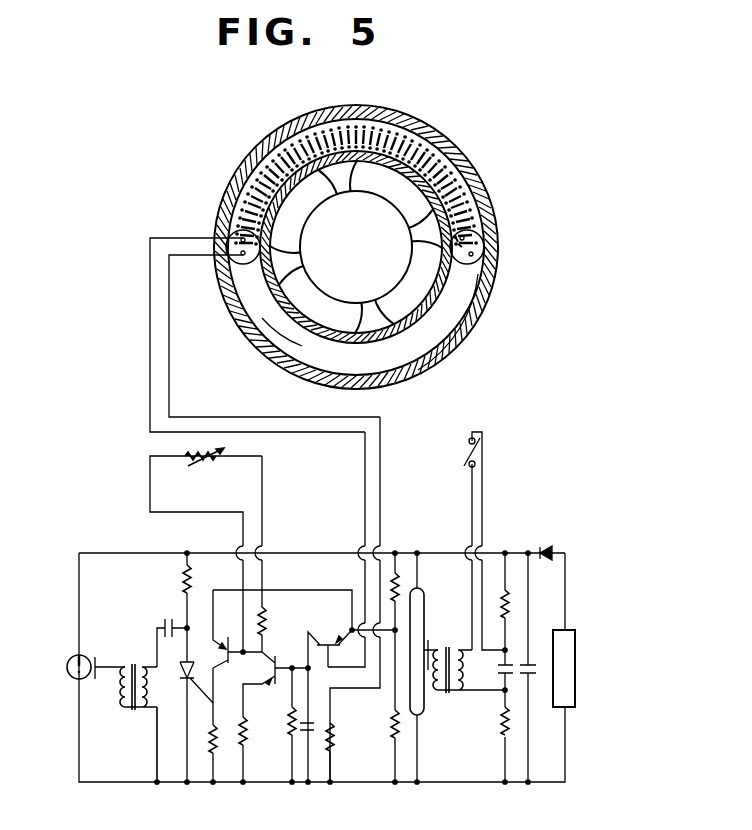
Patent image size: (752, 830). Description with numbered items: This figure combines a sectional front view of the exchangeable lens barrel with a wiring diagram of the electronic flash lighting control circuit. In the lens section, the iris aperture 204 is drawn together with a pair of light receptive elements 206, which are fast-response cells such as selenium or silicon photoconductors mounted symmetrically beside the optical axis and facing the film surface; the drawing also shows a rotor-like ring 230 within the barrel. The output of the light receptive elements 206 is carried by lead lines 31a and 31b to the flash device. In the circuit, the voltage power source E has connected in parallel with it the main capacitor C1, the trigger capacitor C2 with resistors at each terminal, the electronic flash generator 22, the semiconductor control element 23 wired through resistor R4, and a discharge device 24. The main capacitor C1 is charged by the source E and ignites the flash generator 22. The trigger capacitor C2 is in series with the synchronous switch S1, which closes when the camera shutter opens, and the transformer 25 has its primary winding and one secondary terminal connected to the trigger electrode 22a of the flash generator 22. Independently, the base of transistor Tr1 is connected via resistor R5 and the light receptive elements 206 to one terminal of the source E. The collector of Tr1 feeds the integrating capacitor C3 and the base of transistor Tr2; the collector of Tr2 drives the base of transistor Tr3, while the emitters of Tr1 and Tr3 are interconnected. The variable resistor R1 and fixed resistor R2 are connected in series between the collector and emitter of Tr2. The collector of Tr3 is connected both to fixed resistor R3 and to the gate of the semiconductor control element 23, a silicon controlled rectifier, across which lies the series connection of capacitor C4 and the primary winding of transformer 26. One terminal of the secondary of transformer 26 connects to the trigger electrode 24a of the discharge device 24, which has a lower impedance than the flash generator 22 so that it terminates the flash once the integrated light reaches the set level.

The iris aperture 204 is at (413, 197).
The light receptive elements 206 is at (230, 242).
The magnet rotor 230 is at (307, 205).
The lead line 31a is at (383, 498).
The lead line 31b is at (365, 498).
The variable resistor R1 is at (207, 465).
The fixed resistor R2 is at (262, 612).
The fixed resistor R3 is at (218, 735).
The resistor R4 is at (190, 588).
The resistor R5 is at (336, 749).
The main capacitor C1 is at (531, 664).
The trigger capacitor C2 is at (503, 668).
The integrating capacitor C3 is at (316, 722).
The capacitor C4 is at (168, 617).
The transistor Tr1 is at (330, 640).
The transistor Tr2 is at (290, 650).
The transistor Tr3 is at (222, 669).
The synchronous switch S1 is at (462, 456).
The electronic flash generator 22 is at (426, 606).
The trigger electrode 22a is at (430, 648).
The semiconductor control element 23 is at (183, 678).
The discharge device 24 is at (66, 667).
The trigger electrode 24a is at (96, 656).
The transformer 25 is at (450, 692).
The transformer 26 is at (131, 713).
The voltage power source E is at (564, 668).